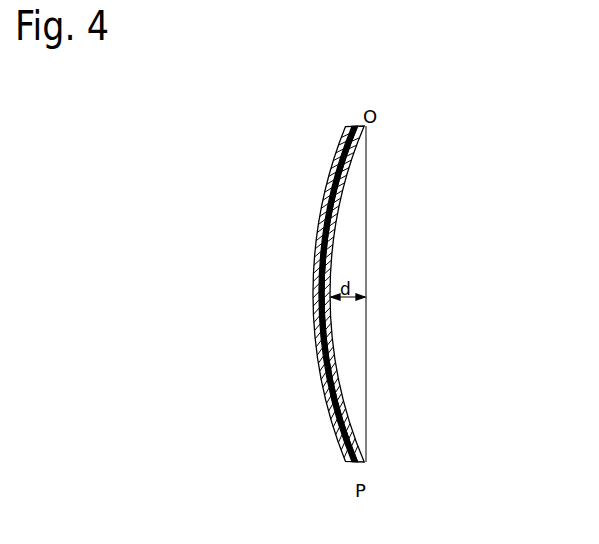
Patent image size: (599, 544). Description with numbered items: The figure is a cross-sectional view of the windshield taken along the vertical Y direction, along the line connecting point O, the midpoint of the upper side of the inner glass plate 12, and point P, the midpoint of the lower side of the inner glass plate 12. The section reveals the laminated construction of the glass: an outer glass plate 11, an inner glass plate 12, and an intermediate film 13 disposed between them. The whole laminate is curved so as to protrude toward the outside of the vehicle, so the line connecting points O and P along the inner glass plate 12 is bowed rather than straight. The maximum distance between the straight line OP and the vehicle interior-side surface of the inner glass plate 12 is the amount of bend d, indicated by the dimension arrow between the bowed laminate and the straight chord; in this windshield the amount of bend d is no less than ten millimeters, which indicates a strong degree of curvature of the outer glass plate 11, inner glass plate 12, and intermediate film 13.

The outer glass plate 11 is at (313, 282).
The inner glass plate 12 is at (327, 253).
The intermediate film 13 is at (331, 360).